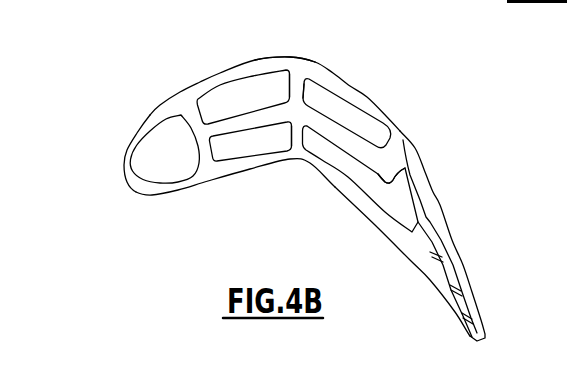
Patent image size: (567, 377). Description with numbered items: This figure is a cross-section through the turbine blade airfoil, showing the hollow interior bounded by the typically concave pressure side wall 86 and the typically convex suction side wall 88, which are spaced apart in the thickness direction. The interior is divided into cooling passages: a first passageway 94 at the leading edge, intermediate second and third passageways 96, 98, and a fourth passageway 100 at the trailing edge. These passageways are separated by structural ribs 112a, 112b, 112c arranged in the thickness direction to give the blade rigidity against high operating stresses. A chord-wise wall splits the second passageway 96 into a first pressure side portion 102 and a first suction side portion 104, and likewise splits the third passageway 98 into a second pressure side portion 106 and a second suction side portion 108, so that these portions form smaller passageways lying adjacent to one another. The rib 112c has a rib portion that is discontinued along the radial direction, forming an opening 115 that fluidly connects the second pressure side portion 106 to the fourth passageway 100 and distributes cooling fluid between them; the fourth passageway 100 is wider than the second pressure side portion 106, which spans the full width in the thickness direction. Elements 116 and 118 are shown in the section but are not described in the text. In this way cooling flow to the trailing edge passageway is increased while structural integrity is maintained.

The pressure side wall 86 is at (208, 181).
The suction side wall 88 is at (238, 68).
The first passageway 94 is at (138, 132).
The second passageway 96 is at (258, 77).
The third passageway 98 is at (387, 117).
The fourth passageway 100 is at (432, 203).
The first pressure side portion 102 is at (227, 147).
The first suction side portion 104 is at (227, 87).
The second pressure side portion 106 is at (318, 148).
The second suction side portion 108 is at (350, 108).
The rib 112a is at (193, 123).
The rib 112b is at (305, 87).
The rib 112c is at (397, 157).
The opening 115 is at (405, 168).
The rib between lower cavities 116 is at (292, 164).
The rib between upper cavities 118 is at (299, 70).